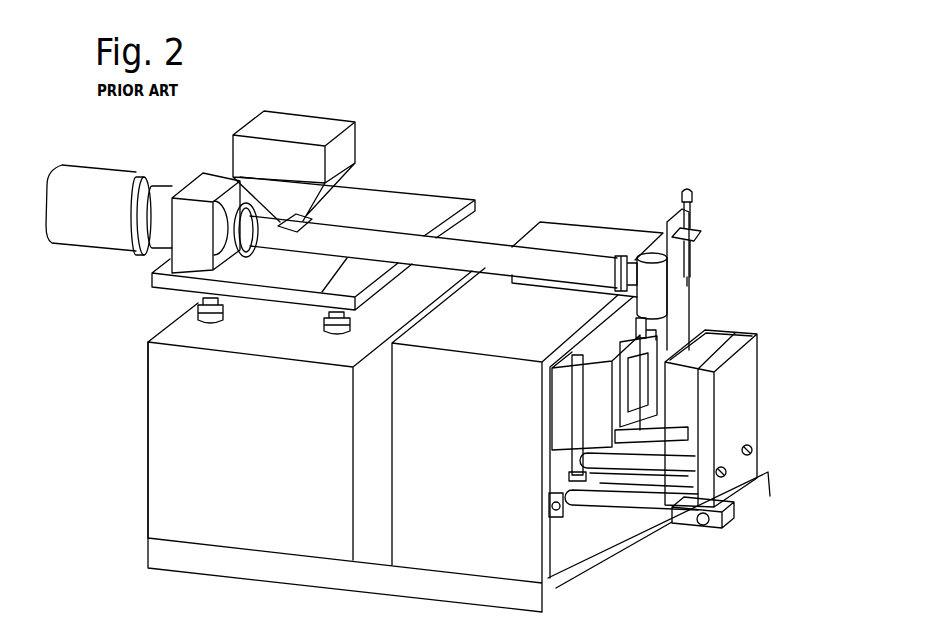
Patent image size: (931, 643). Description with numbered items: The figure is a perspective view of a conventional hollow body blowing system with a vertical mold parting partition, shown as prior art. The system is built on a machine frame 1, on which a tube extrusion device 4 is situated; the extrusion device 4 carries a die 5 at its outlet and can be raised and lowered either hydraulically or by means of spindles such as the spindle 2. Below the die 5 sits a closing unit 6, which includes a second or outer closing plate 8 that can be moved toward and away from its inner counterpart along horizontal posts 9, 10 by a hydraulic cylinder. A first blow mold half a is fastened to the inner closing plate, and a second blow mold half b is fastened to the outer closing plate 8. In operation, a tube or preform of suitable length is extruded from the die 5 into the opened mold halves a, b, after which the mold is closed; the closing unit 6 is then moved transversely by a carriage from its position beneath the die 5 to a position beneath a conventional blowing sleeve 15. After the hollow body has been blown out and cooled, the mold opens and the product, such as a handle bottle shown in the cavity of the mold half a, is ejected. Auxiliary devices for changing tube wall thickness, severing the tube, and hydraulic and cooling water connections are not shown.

The machine frame 1 is at (183, 453).
The spindle 2 is at (195, 302).
The tube extrusion device 4 is at (488, 252).
The die 5 is at (663, 317).
The closing unit 6 is at (652, 562).
The second or outer closing plate 8 is at (752, 350).
The horizontal post 9 is at (713, 528).
The horizontal post 10 is at (653, 438).
The blowing sleeve 15 is at (692, 272).
The first blow mold half a is at (643, 333).
The second blow mold half b is at (718, 338).